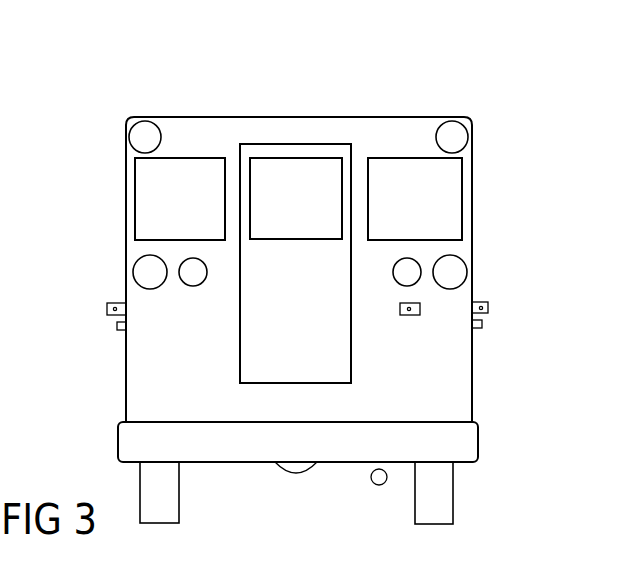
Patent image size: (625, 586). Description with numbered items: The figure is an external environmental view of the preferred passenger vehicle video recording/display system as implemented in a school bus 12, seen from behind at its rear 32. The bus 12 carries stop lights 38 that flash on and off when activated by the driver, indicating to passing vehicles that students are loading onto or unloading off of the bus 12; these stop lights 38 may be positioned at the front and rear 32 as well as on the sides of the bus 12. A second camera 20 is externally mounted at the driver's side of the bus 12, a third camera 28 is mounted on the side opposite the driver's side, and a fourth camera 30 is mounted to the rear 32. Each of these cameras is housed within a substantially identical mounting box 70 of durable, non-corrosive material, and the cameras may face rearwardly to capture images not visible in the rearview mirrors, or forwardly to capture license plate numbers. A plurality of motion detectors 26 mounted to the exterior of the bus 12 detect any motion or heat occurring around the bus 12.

The school bus 12 is at (299, 320).
The second camera 20 is at (107, 305).
The motion detectors 26 is at (115, 327).
The third camera 28 is at (488, 305).
The fourth camera 30 is at (420, 312).
The rear 32 is at (457, 398).
The stop lights 38 is at (142, 128).
The mounting box 70 is at (107, 310).